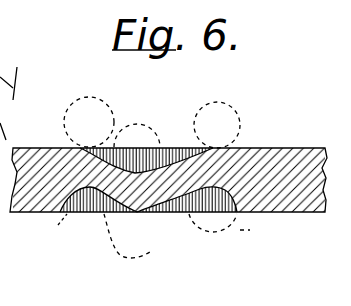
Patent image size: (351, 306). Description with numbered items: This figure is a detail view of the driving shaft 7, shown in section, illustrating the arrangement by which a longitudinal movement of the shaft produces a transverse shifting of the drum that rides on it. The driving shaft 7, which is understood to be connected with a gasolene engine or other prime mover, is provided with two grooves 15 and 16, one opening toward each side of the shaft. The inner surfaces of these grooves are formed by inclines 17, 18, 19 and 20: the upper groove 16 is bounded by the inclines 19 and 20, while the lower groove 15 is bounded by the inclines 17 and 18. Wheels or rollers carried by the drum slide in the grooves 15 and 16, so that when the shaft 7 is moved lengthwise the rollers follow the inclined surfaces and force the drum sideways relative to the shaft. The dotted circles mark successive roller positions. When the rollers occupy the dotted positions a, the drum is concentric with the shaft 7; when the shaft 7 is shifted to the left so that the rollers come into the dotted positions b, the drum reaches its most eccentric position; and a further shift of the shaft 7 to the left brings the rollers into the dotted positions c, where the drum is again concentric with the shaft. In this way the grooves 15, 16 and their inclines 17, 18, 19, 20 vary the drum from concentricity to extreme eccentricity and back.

The driving shaft 7 is at (297, 156).
The incline 19 is at (112, 147).
The groove 16 is at (168, 148).
The incline 20 is at (190, 147).
The incline 18 is at (83, 212).
The incline 17 is at (155, 213).
The groove 15 is at (177, 213).
The dotted position a is at (78, 160).
The dotted position b is at (127, 190).
The dotted position c is at (224, 160).